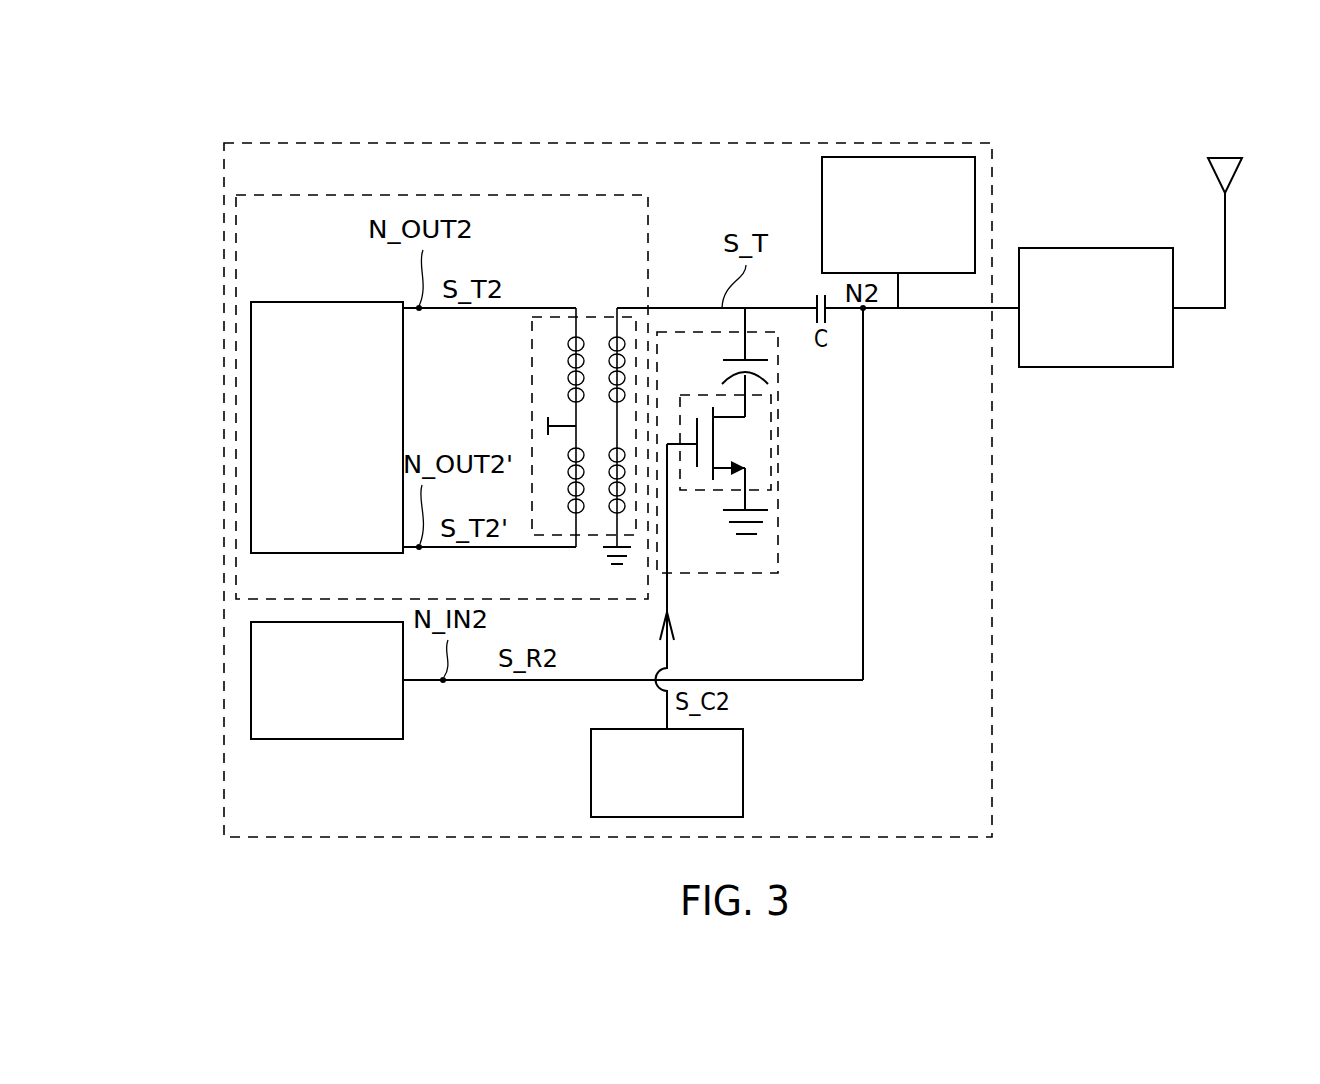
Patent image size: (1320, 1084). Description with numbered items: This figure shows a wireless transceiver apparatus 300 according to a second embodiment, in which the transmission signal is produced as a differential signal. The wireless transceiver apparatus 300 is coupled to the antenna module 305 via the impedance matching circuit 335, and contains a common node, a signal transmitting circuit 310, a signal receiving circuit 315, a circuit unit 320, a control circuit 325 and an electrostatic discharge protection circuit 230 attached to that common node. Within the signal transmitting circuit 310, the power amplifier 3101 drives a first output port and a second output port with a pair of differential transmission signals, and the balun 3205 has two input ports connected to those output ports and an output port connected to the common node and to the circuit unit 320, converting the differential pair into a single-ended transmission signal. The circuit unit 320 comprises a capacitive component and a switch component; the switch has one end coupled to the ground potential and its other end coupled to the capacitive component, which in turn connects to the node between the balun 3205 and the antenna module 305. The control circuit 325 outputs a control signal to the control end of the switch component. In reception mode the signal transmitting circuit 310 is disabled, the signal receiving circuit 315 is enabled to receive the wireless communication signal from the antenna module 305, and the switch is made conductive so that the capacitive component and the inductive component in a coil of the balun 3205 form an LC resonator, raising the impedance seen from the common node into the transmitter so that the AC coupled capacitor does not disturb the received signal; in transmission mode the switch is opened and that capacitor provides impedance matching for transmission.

The wireless transceiver apparatus 300 is at (672, 141).
The antenna module 305 is at (1228, 152).
The signal transmitting circuit 310 is at (236, 398).
The power amplifier 3101 is at (325, 302).
The balun 3205 is at (585, 317).
The circuit unit 320 is at (684, 332).
The control circuit 325 is at (745, 788).
The signal receiving circuit 315 is at (326, 741).
The ESD protection circuit 230 is at (822, 187).
The impedance matching circuit 335 is at (1094, 370).